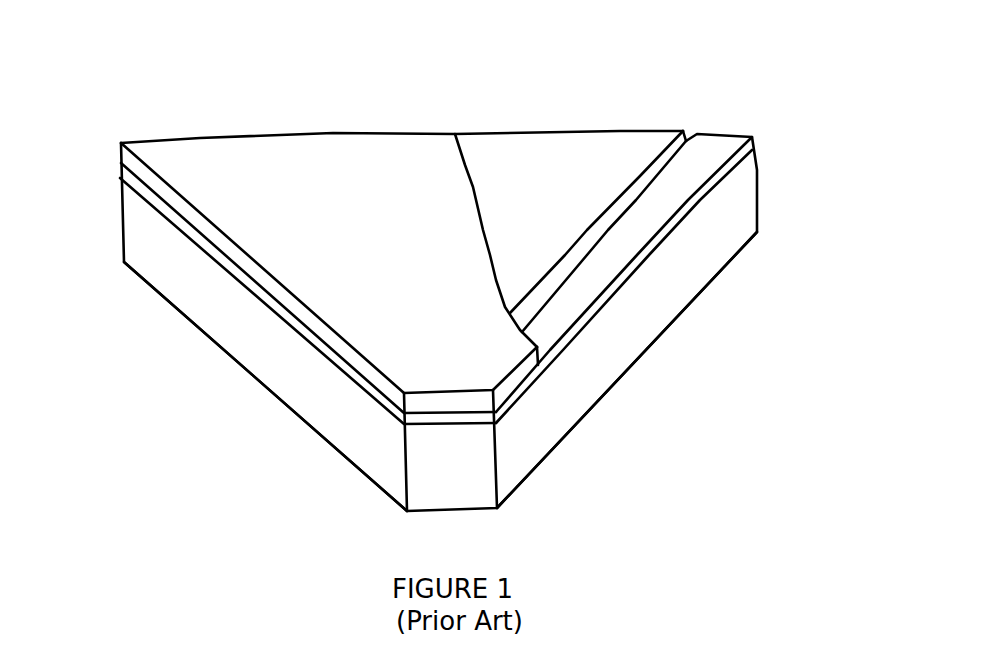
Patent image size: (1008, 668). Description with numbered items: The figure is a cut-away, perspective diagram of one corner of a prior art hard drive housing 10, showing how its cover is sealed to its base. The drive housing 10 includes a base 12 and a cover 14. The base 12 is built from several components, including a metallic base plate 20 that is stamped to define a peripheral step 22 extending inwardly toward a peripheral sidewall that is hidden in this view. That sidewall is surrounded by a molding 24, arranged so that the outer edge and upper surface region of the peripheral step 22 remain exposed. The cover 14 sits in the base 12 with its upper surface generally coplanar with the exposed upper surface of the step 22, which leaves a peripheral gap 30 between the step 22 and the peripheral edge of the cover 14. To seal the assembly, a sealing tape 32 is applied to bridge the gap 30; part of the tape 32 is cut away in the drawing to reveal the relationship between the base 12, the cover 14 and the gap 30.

The drive housing 10 is at (803, 137).
The base 12 is at (765, 213).
The cover 14 is at (613, 128).
The metallic base plate 20 is at (715, 130).
The peripheral step 22 is at (223, 273).
The molding 24 is at (253, 382).
The peripheral gap 30 is at (692, 131).
The sealing tape 32 is at (122, 163).